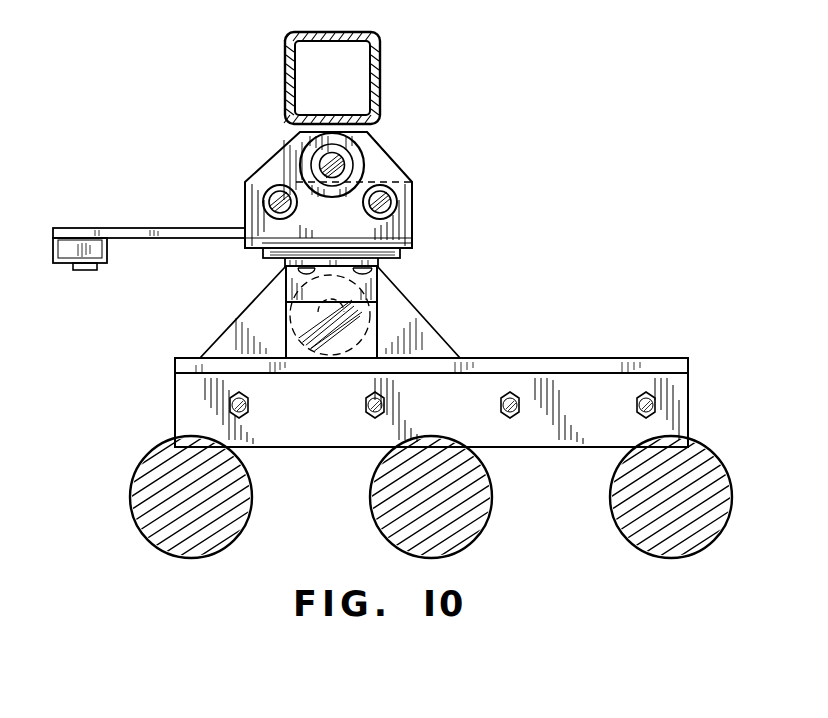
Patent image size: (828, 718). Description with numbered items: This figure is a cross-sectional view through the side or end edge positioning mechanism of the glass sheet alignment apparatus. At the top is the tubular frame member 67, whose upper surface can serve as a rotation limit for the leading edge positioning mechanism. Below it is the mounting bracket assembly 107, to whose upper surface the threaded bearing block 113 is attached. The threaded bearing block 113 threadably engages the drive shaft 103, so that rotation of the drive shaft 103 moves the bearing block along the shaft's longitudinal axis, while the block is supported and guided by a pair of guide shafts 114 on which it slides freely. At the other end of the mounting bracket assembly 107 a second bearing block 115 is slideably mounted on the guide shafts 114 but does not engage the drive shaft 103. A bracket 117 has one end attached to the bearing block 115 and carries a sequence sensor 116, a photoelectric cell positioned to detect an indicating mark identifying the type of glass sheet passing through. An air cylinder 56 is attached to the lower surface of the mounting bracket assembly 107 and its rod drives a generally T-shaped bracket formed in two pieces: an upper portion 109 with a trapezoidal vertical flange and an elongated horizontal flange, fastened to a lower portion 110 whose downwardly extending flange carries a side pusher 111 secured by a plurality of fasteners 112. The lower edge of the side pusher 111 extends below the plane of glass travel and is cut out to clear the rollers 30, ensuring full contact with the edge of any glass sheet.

The tubular frame member 67 is at (377, 67).
The mounting bracket assembly 107 is at (409, 257).
The drive shaft 103 is at (340, 168).
The threaded bearing block 113 is at (285, 178).
The guide shafts 114 is at (278, 200).
The bearing block 115 is at (383, 178).
The bracket 117 is at (114, 228).
The sequence sensor 116 is at (70, 250).
The upper portion of the bracket 109 is at (427, 340).
The air cylinder 56 is at (288, 340).
The lower portion of the bracket 110 is at (606, 360).
The side pusher 111 is at (680, 403).
The fasteners 112 is at (366, 407).
The rollers 30 is at (372, 495).